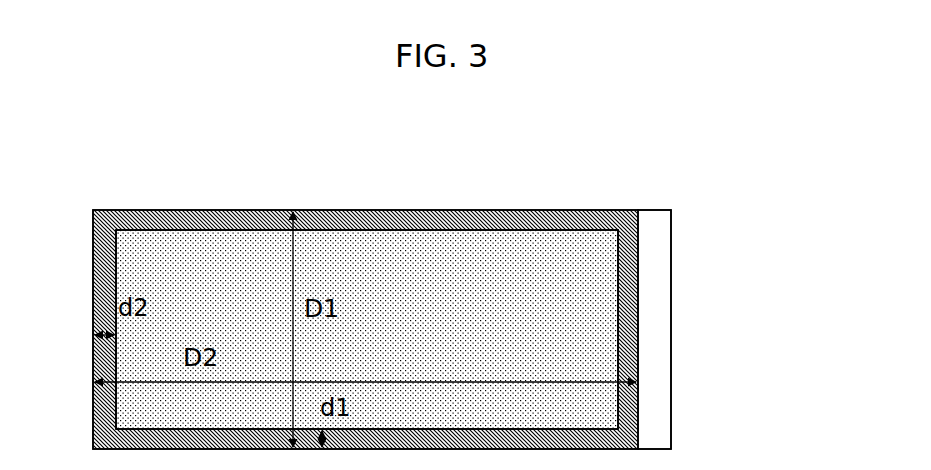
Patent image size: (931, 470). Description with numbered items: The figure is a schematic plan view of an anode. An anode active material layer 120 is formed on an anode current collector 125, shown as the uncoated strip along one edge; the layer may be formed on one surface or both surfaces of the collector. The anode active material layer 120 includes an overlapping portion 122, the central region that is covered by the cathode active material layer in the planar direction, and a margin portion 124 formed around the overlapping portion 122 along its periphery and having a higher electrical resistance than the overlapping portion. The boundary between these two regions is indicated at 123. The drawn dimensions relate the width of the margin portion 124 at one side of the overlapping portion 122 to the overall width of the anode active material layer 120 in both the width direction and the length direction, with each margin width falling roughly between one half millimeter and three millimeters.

The anode active material layer 120 is at (641, 245).
The overlapping portion 122 is at (602, 412).
The boundary of display area 123 is at (621, 356).
The margin portion 124 is at (638, 307).
The anode current collector 125 is at (652, 265).